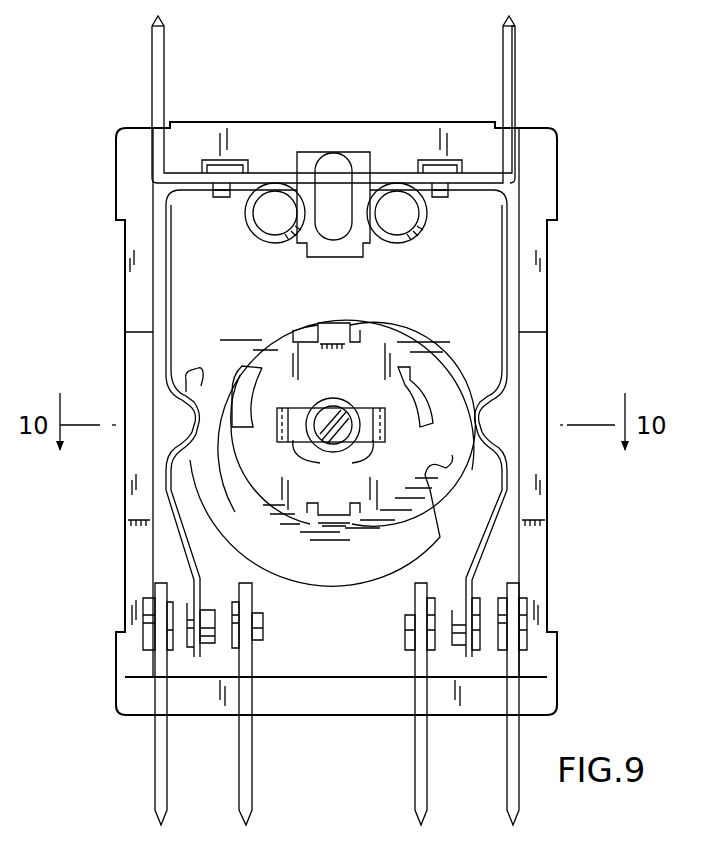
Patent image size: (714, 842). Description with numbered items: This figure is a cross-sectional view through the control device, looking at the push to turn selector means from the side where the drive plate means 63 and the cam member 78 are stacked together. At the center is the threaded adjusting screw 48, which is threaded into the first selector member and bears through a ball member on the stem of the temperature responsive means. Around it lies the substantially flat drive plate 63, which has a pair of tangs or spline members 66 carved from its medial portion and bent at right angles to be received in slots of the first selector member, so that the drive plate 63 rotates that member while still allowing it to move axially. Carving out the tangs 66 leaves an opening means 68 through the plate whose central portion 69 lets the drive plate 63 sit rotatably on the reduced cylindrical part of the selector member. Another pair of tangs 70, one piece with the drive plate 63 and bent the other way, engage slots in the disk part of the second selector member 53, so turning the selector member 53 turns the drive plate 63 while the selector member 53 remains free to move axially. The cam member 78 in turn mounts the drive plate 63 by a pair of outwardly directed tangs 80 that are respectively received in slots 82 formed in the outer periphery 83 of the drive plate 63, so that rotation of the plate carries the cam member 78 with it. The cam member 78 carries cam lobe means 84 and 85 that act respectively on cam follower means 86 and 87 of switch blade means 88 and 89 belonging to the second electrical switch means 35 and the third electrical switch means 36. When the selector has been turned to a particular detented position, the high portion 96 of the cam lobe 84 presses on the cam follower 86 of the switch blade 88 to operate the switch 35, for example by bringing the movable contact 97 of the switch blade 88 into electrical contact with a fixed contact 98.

The second electrical switch means 35 is at (495, 580).
The third electrical switch means 36 is at (215, 580).
The threaded adjusting screw 48 is at (333, 404).
The second selector member 53 is at (270, 335).
The drive plate means 63 is at (307, 350).
The tangs or spline members 66 is at (358, 455).
The opening means 68 is at (412, 382).
The central portion 69 is at (331, 396).
The tangs or spline members 70 is at (340, 322).
The cam member 78 is at (400, 317).
The outwardly directed tangs 80 is at (240, 382).
The slots 82 is at (175, 408).
The outer periphery 83 is at (442, 470).
The cam lobe means 84 is at (387, 303).
The cam lobe means 85 is at (385, 570).
The cam follower means 86 is at (478, 413).
The cam follower means 87 is at (185, 430).
The switch blade means 88 is at (519, 284).
The switch blade means 89 is at (153, 290).
The high portion 96 is at (190, 372).
The movable contact 97 is at (480, 635).
The fixed contact 98 is at (507, 610).